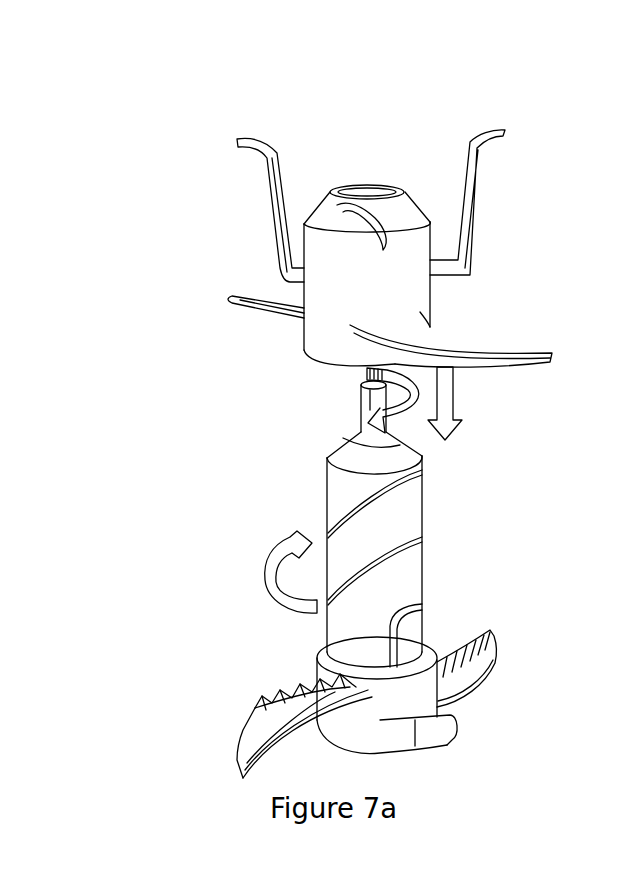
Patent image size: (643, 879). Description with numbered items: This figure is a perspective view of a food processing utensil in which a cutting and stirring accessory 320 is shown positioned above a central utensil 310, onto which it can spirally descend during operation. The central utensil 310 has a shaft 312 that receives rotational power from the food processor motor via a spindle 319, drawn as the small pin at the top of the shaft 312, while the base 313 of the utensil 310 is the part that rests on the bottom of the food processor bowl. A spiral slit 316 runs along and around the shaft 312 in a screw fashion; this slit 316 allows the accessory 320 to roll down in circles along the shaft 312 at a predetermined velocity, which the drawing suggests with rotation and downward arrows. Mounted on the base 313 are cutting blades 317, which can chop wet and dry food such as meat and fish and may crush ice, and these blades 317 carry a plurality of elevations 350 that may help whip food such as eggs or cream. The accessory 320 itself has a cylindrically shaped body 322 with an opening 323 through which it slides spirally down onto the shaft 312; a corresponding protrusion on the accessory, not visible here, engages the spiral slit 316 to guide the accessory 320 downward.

The central utensil 310 is at (461, 466).
The shaft 312 is at (422, 637).
The base 313 is at (403, 693).
The spiral slit 316 is at (423, 527).
The cutting blades 317 is at (237, 760).
The spindle 319 is at (368, 410).
The cutting accessory 320 is at (305, 383).
The cylindrically shaped body 322 is at (413, 303).
The opening 323 is at (372, 187).
The elevations 350 is at (288, 697).